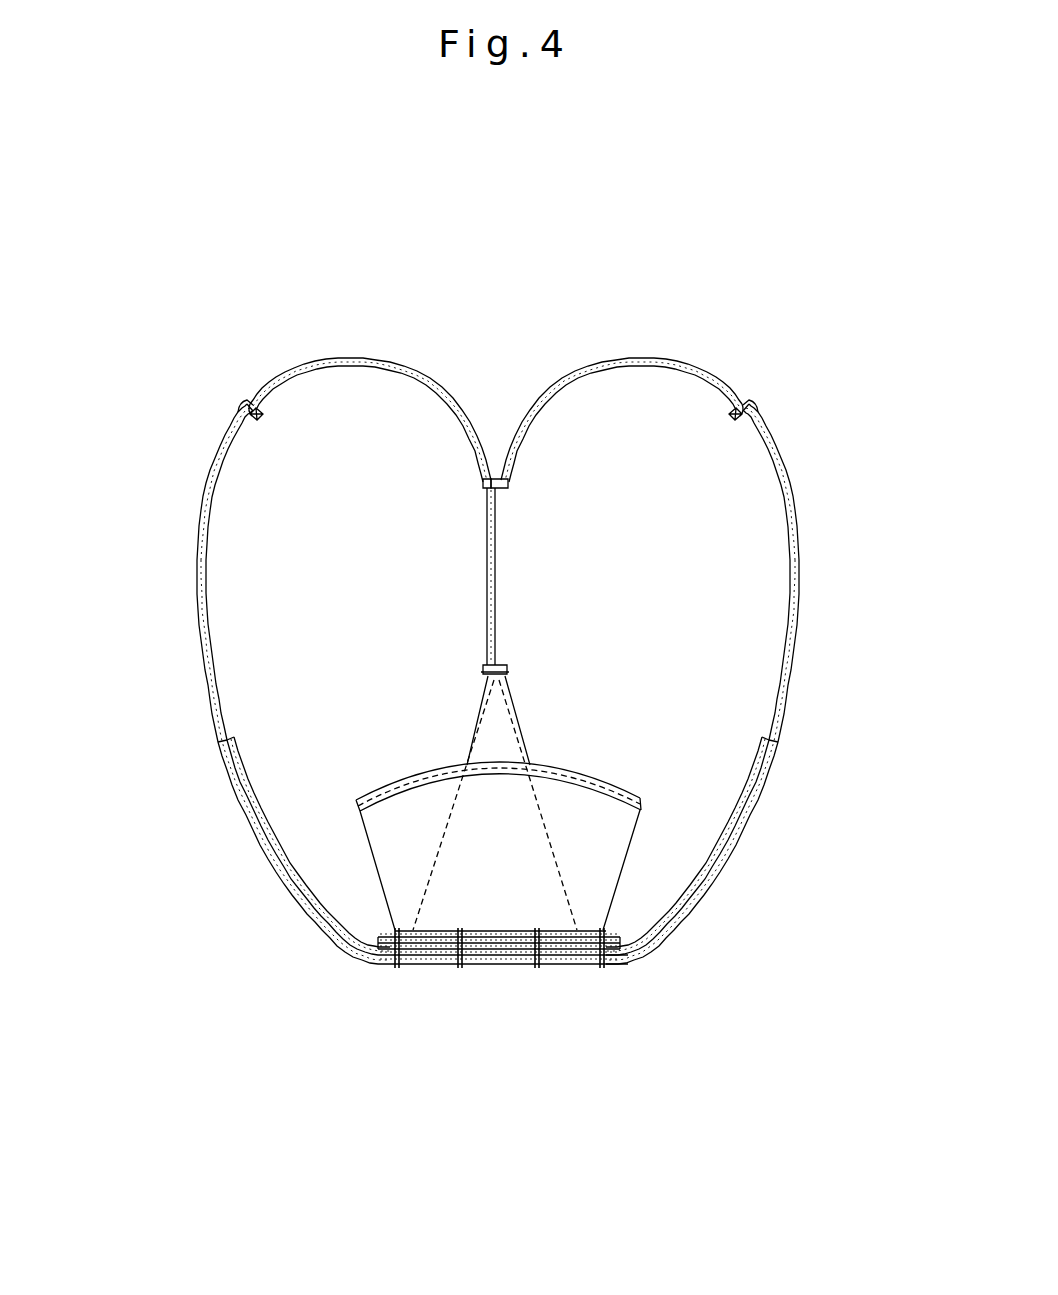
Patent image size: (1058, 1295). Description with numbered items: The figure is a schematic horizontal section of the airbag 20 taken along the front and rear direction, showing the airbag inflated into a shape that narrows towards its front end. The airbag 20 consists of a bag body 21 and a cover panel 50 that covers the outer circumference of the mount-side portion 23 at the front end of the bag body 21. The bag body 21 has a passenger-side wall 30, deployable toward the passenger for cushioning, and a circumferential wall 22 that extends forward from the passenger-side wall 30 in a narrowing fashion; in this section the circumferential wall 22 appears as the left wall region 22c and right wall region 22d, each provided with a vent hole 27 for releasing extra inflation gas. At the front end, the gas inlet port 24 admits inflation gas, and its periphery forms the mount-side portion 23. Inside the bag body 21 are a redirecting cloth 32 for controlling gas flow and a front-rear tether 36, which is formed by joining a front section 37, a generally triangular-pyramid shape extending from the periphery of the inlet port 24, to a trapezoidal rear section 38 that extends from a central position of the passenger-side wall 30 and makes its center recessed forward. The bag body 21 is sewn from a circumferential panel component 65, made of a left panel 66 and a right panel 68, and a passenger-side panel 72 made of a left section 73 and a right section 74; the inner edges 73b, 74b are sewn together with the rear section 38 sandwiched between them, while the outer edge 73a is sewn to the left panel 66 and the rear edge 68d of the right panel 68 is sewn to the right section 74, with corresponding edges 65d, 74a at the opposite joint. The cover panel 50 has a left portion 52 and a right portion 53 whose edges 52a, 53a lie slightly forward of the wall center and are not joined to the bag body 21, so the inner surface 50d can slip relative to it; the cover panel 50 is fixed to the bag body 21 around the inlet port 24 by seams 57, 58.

The airbag 20 is at (752, 262).
The bag body 21 is at (815, 546).
The circumferential wall 22 is at (800, 675).
The left wall region 22c is at (212, 695).
The right wall region 22d is at (782, 713).
The mount-side portion 23 is at (640, 965).
The gas inlet port 24 is at (498, 965).
The vent hole 27 is at (205, 632).
The passenger-side wall 30 is at (646, 340).
The redirecting cloth 32 is at (375, 775).
The front-rear tether 36 is at (605, 545).
The front section 37 is at (518, 703).
The rear section 38 is at (492, 578).
The cover panel 50 is at (703, 915).
The inner surface 50d is at (228, 760).
The left portion 52 is at (730, 855).
The edge 52a is at (778, 733).
The right portion 53 is at (262, 850).
The edge 53a is at (220, 733).
The seam 57 is at (455, 975).
The seam 58 is at (395, 975).
The circumferential panel component 65 is at (500, 471).
The right panel upper end 65d is at (745, 422).
The left panel 66 is at (803, 495).
The right panel 68 is at (195, 495).
The rear edge 68d is at (250, 425).
The passenger-side panel 72 is at (496, 372).
The left section 73 is at (577, 366).
The outer edge 73a is at (738, 420).
The inner edge 73b is at (500, 490).
The right section 74 is at (365, 345).
The left arch outer end 74a is at (258, 420).
The inner edge 74b is at (487, 503).